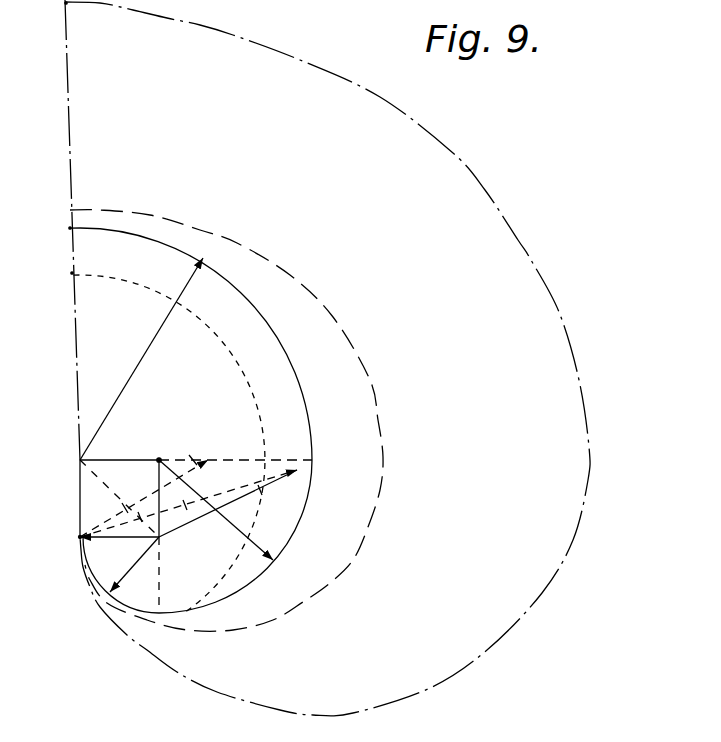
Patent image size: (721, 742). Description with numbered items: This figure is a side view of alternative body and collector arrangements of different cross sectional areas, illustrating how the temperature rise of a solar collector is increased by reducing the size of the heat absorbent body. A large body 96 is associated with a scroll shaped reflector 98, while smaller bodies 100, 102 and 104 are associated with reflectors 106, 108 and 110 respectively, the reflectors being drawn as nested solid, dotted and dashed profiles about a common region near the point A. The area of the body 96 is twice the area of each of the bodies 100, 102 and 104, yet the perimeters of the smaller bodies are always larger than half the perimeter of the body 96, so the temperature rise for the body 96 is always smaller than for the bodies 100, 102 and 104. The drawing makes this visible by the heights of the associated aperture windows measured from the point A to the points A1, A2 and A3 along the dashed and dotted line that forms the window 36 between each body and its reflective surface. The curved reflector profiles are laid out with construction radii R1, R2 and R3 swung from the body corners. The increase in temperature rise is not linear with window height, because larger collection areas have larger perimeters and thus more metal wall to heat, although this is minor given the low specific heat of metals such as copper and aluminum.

The window 36 is at (67, 100).
The body 96 is at (123, 453).
The reflector 98 is at (308, 420).
The body 100 is at (122, 502).
The body 102 is at (200, 463).
The body 104 is at (225, 492).
The reflector 106 is at (238, 363).
The reflector 108 is at (330, 308).
The reflector 110 is at (534, 265).
The first radius R1 is at (140, 560).
The second radius R2 is at (248, 545).
The third radius R3 is at (147, 348).
The aperture window end point A is at (78, 536).
The aperture window end point A1 is at (67, 229).
The aperture window end point A2 is at (67, 273).
The aperture window end point A3 is at (58, 4).